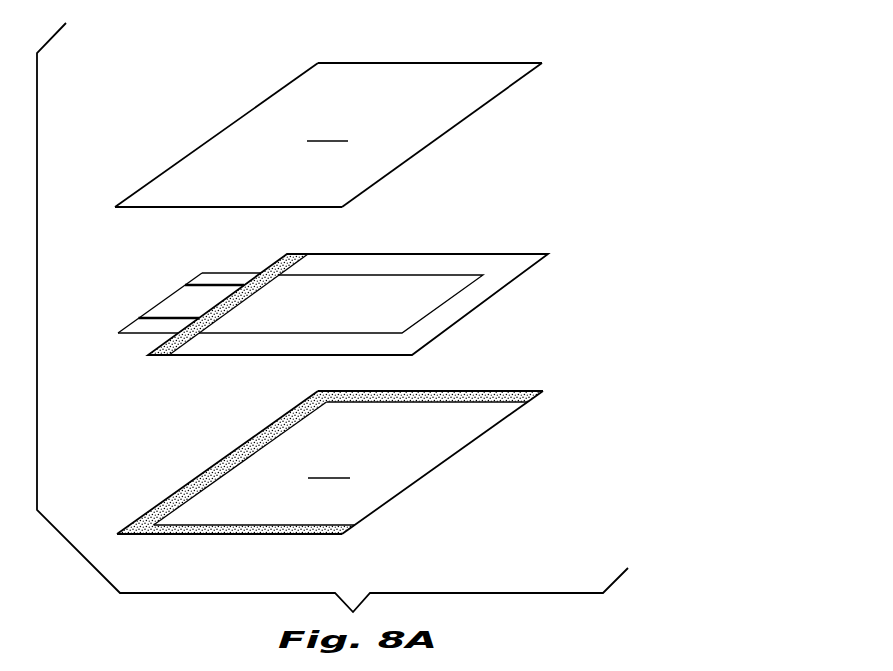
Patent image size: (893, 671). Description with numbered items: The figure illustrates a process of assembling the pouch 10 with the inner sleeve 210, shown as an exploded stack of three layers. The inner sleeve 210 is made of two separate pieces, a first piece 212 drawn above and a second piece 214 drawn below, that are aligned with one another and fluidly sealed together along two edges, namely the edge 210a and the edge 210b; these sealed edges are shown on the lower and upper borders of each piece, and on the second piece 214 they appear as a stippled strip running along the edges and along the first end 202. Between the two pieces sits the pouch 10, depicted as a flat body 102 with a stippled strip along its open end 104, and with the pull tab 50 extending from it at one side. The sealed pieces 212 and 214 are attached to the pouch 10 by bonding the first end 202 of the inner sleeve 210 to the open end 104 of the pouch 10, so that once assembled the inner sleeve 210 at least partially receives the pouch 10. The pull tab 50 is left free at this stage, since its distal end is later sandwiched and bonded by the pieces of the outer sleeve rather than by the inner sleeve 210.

The pouch 10 is at (522, 256).
The pull tab 50 is at (167, 305).
The membrane 102 is at (513, 282).
The open end 104 is at (155, 347).
The first end 202 is at (205, 142).
The inner sleeve 210 is at (470, 98).
The edge 210a is at (197, 207).
The edge 210b is at (482, 63).
The piece 212 is at (329, 130).
The piece 214 is at (330, 467).